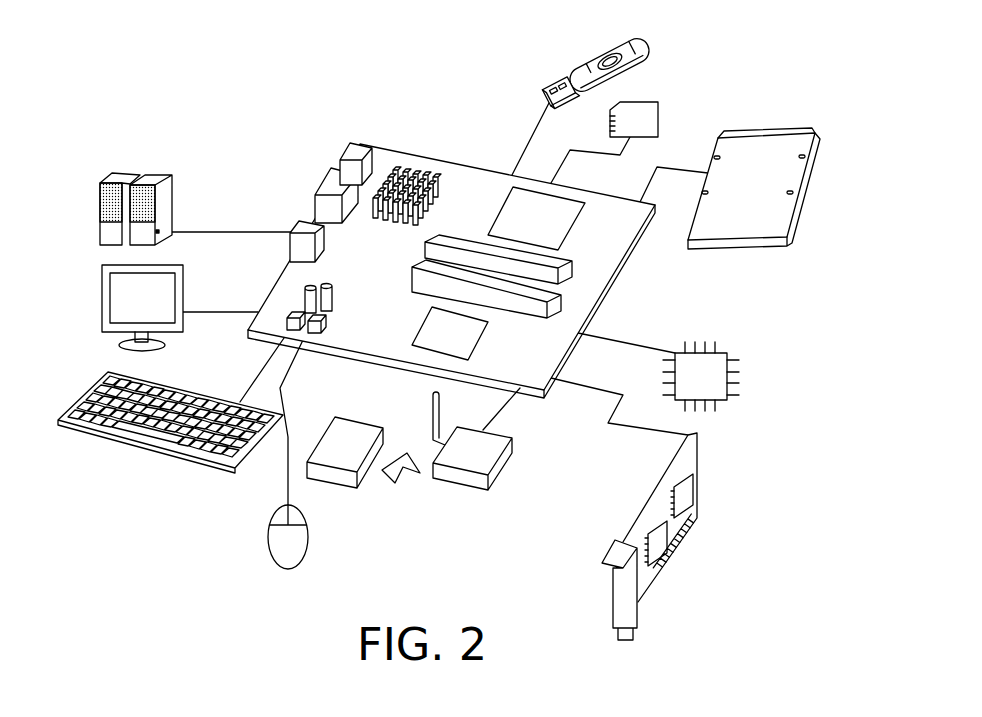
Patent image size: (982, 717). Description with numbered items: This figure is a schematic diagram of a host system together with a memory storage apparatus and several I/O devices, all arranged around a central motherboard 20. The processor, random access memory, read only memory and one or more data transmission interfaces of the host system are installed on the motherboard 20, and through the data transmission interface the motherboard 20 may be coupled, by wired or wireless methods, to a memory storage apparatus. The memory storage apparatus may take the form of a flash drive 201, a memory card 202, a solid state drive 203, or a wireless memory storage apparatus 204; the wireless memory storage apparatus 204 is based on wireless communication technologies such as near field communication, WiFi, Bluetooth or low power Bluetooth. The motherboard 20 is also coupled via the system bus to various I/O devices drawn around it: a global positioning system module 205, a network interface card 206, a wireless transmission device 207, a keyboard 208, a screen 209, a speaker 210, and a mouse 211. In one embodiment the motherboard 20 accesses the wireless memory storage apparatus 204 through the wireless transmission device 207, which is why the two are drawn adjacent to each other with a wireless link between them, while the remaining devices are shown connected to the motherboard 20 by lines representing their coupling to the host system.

The motherboard 20 is at (455, 180).
The flash drive 201 is at (591, 55).
The memory card 202 is at (658, 110).
The solid state drive 203 is at (770, 130).
The wireless memory storage apparatus 204 is at (319, 432).
The global positioning system module 205 is at (739, 372).
The network interface card 206 is at (698, 487).
The wireless transmission device 207 is at (513, 470).
The keyboard 208 is at (174, 458).
The screen 209 is at (101, 313).
The speaker 210 is at (98, 232).
The mouse 211 is at (310, 553).